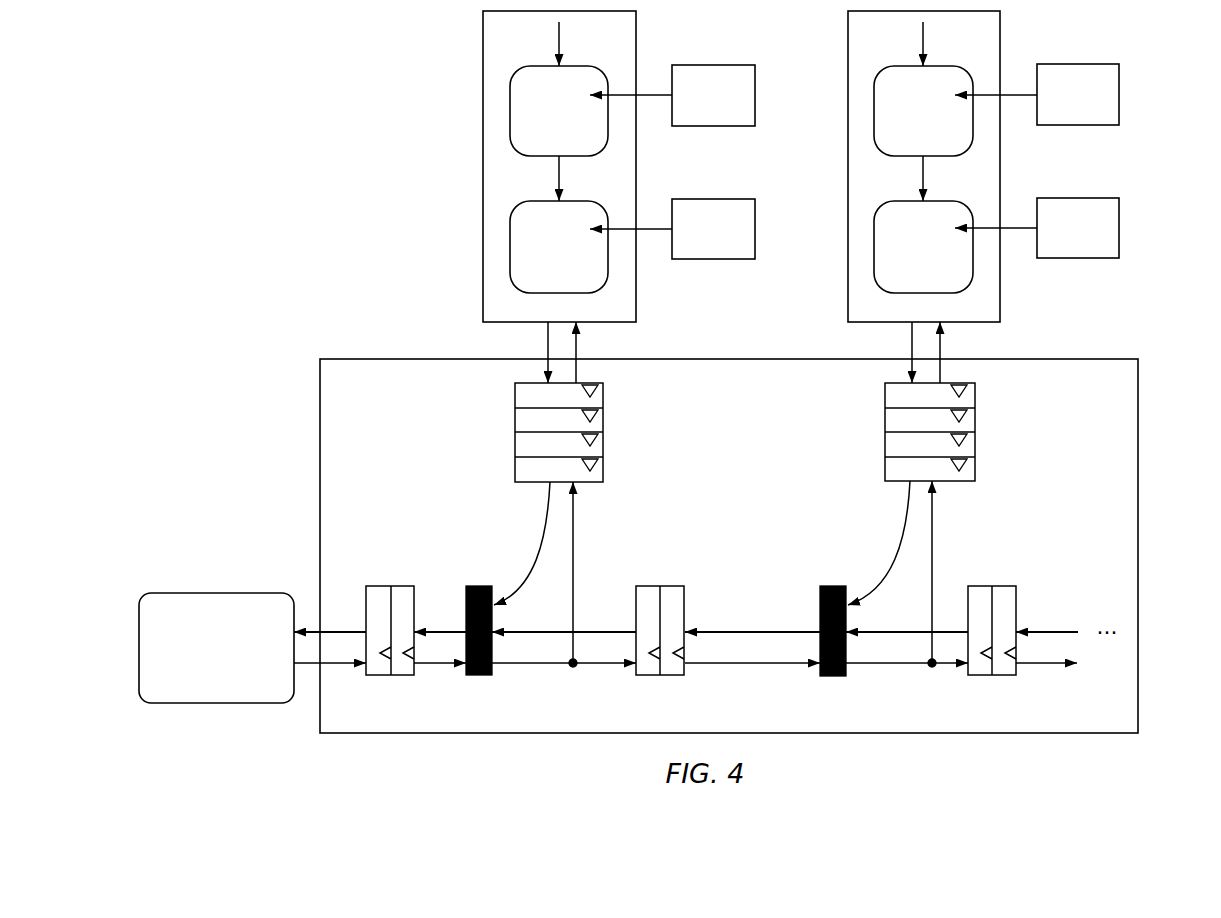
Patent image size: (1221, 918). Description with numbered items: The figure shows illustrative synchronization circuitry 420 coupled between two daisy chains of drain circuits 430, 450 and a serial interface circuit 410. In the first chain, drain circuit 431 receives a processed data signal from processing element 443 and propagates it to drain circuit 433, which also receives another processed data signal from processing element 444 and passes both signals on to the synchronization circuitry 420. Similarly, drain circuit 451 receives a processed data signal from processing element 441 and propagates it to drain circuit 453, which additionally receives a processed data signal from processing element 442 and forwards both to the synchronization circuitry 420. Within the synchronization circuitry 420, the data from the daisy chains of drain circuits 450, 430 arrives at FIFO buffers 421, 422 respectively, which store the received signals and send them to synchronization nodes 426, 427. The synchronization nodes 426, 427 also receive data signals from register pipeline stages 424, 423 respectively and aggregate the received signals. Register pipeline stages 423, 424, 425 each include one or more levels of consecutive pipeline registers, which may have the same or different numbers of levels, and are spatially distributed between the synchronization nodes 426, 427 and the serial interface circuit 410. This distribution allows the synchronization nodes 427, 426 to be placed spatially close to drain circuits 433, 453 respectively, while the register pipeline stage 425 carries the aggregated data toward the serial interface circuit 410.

The serial interface circuit 410 is at (218, 593).
The synchronization circuitry 420 is at (1138, 545).
The FIFO buffer 421 is at (603, 432).
The FIFO buffer 422 is at (975, 432).
The register pipeline stage 423 is at (992, 586).
The register pipeline stage 424 is at (660, 586).
The register pipeline stage 425 is at (391, 586).
The synchronization node 426 is at (479, 586).
The synchronization node 427 is at (834, 586).
The daisy chain of drain circuits 430 is at (848, 163).
The drain circuit 431 is at (923, 111).
The drain circuit 433 is at (923, 247).
The processing element 441 is at (713, 95).
The processing element 442 is at (713, 229).
The processing element 443 is at (1078, 94).
The processing element 444 is at (1078, 228).
The daisy chain of drain circuits 450 is at (483, 163).
The drain circuit 451 is at (559, 111).
The drain circuit 453 is at (559, 247).